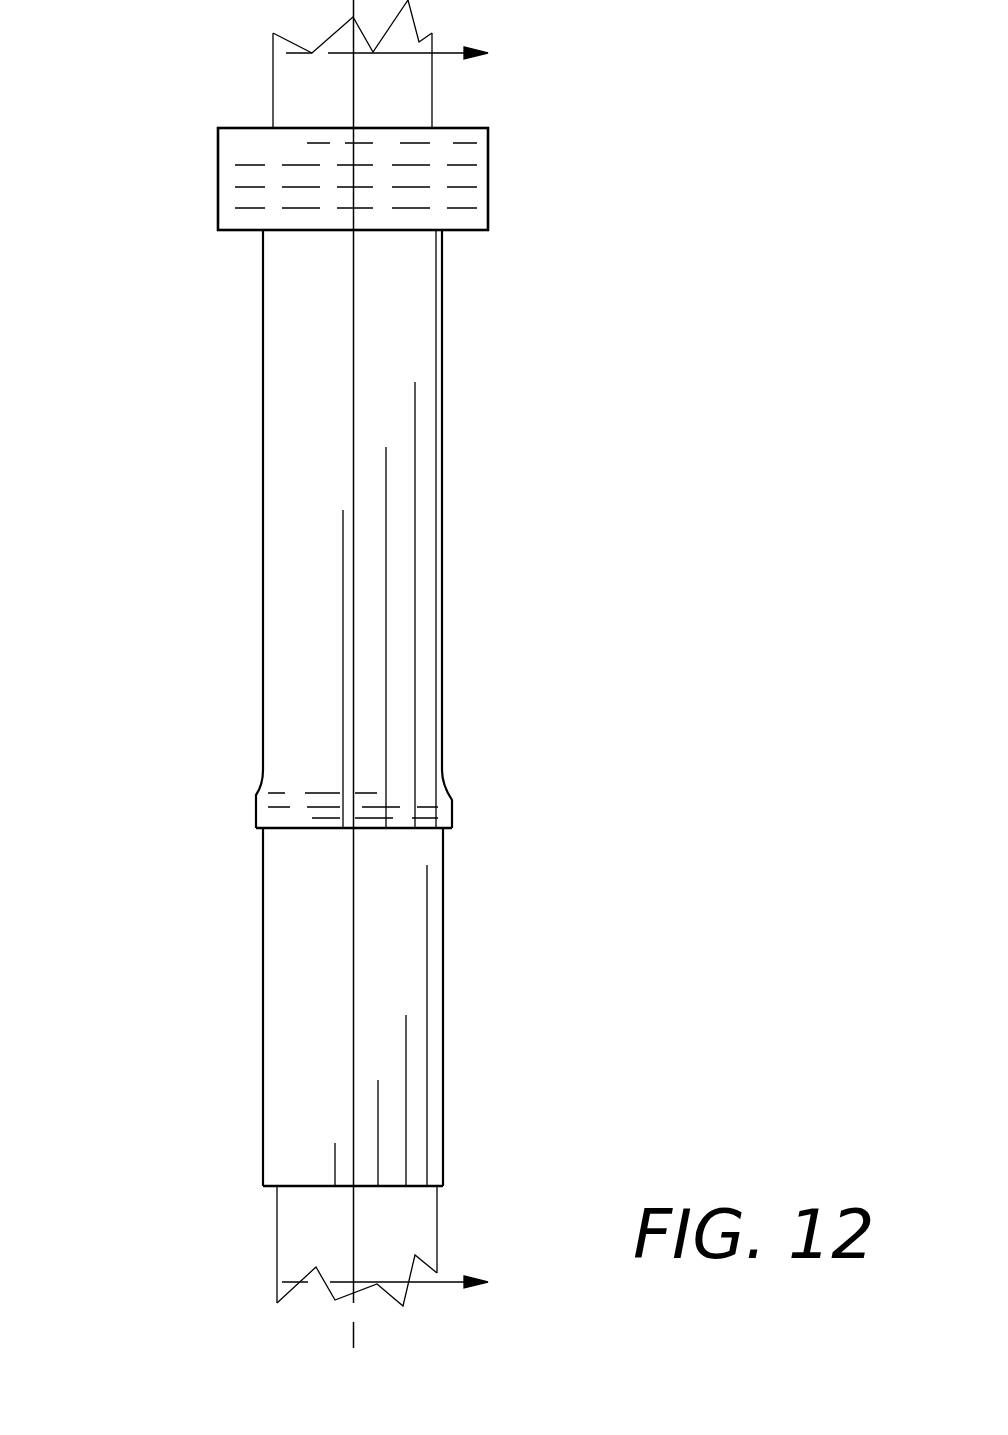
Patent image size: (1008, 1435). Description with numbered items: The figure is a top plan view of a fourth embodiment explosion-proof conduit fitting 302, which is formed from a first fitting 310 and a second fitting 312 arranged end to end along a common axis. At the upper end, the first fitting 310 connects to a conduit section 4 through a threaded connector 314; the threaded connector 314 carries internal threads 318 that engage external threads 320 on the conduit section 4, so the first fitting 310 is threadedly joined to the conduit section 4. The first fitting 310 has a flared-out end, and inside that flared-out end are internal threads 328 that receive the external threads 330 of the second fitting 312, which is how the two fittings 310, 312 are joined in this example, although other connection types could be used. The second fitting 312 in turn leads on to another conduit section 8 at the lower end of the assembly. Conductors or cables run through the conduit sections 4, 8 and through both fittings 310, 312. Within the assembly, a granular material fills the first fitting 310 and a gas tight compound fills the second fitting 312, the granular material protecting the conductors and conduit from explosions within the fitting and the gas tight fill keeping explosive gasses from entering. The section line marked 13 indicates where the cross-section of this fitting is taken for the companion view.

The explosion-proof conduit fitting 302 is at (717, 82).
The threaded connector 314 is at (223, 142).
The internal threads 318 is at (450, 169).
The external threads 320 is at (488, 148).
The first fitting 310 is at (280, 503).
The internal threads 328 is at (245, 791).
The external threads 330 is at (278, 807).
The second fitting 312 is at (283, 917).
The conduit section 4 is at (295, 99).
The conduit section 8 is at (293, 1258).
The section line 13- 13 is at (385, 675).